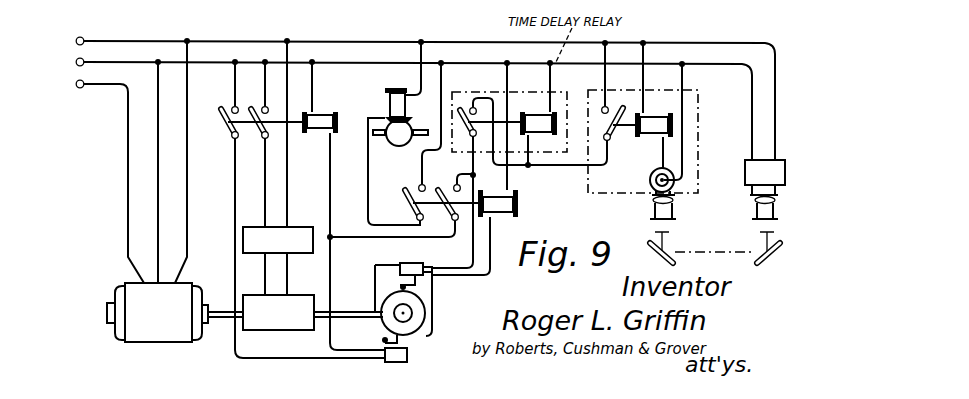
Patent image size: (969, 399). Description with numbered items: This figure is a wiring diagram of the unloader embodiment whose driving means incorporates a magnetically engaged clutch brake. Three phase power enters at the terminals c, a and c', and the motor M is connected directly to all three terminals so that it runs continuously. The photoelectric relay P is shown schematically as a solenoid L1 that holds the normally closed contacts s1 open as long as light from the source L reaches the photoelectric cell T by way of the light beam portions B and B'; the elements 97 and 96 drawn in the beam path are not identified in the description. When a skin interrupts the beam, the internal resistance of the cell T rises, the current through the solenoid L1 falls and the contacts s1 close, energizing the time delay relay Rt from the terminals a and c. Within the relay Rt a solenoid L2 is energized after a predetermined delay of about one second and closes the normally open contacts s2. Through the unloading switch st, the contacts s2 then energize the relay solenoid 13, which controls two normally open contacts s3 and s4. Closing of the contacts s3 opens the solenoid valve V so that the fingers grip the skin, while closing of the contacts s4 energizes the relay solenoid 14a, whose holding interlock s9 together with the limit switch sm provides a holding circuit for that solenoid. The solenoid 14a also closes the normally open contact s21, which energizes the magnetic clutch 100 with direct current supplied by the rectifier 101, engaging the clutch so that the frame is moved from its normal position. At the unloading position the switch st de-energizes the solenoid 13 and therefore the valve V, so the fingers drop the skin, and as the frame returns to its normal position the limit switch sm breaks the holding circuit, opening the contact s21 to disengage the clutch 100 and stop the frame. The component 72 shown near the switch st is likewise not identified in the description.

The power source terminal c is at (412, 95).
The power source terminal a is at (398, 106).
The power source terminal c' is at (95, 179).
The motor M is at (157, 312).
The holding interlock s9 is at (222, 114).
The normally open contact s21 is at (253, 130).
The rectifier 101 is at (297, 218).
The clutch 100 is at (272, 331).
The solenoid L4a 14a is at (323, 115).
The solenoid valve V is at (398, 133).
The normally open contacts s3 is at (404, 190).
The normally open contacts s4 is at (439, 190).
The time delay relay Rt is at (510, 154).
The normally open contacts s2 is at (461, 108).
The solenoid L2 is at (546, 89).
The solenoid L3 13 is at (503, 195).
The photoelectric relay P is at (643, 158).
The normally closed contacts s1 is at (612, 121).
The solenoid L1 is at (660, 128).
The photoelectric cell T is at (650, 168).
The light source L is at (772, 171).
The light beam portion B is at (773, 218).
The light beam portion B' is at (675, 221).
The mirror 97 is at (653, 259).
The mirror 96 is at (777, 258).
The unloading switch st is at (412, 270).
The cam 72 is at (420, 313).
The limit switch sm is at (408, 357).